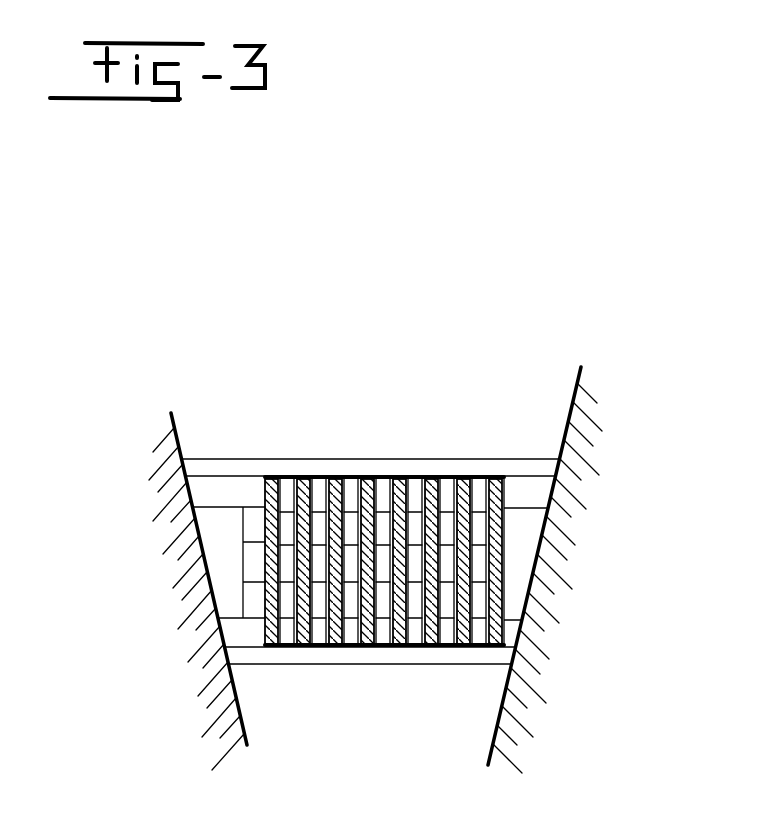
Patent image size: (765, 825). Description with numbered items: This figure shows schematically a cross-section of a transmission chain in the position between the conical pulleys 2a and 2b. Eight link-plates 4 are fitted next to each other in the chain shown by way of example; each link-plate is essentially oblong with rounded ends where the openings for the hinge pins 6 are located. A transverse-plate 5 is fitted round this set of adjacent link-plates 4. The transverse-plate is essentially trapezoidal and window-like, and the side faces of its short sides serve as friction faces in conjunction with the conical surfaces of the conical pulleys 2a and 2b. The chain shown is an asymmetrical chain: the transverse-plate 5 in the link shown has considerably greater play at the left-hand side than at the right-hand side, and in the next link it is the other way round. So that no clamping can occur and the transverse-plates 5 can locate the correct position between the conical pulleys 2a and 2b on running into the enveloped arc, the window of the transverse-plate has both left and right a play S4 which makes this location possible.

The conical pulley 2a is at (578, 514).
The conical pulley 2b is at (166, 492).
The link-plate 4 is at (368, 647).
The transverse-plate 5 is at (248, 468).
The hinge pin 6 is at (478, 642).
The play S4 is at (503, 574).